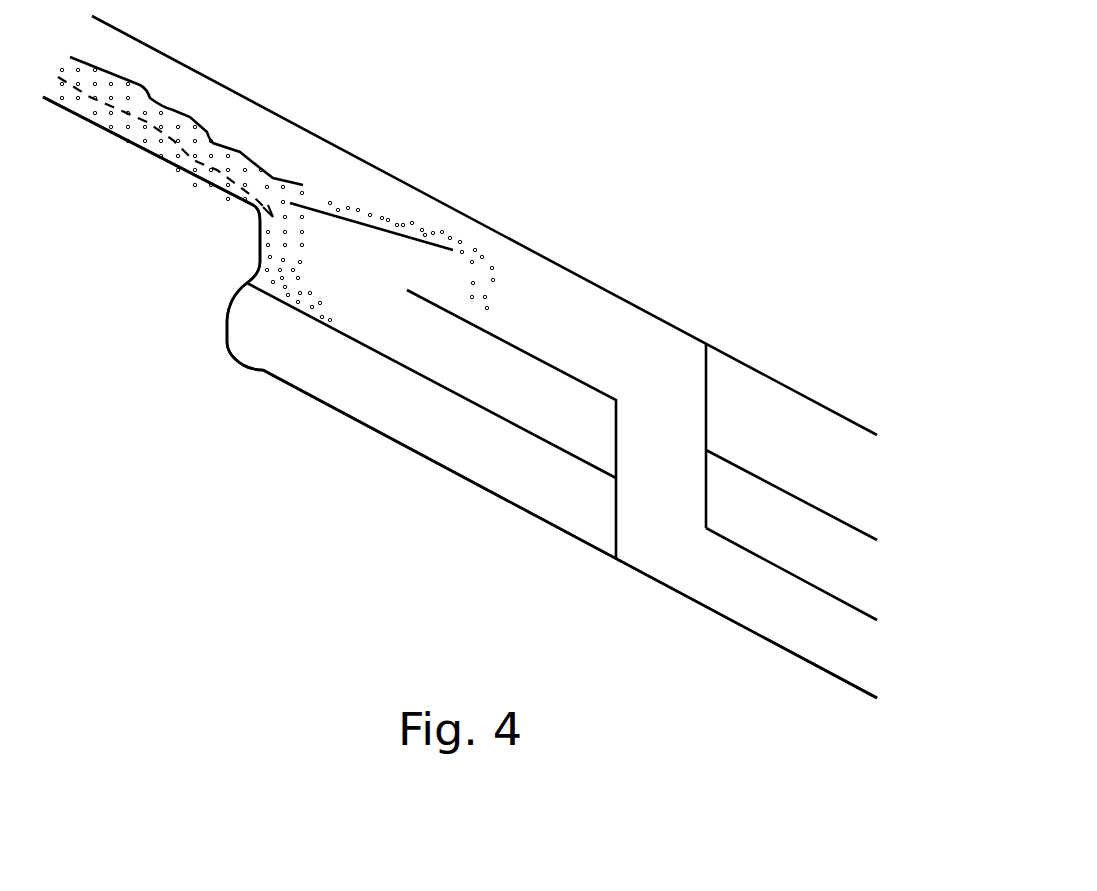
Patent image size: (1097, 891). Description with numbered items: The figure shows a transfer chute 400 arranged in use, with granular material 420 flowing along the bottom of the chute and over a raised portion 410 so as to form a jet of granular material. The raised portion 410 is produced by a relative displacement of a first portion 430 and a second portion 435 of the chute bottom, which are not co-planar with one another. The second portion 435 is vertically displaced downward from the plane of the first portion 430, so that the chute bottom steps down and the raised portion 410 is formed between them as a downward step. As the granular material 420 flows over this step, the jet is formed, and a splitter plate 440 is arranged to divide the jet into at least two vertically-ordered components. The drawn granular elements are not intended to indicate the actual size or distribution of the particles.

The chute 400 is at (460, 357).
The raised portion 410 is at (195, 253).
The granular material 420 is at (218, 153).
The first portion of the bottom of the chute 430 is at (122, 125).
The second portion of the bottom of the chute 435 is at (370, 428).
The splitter plate 440 is at (325, 213).